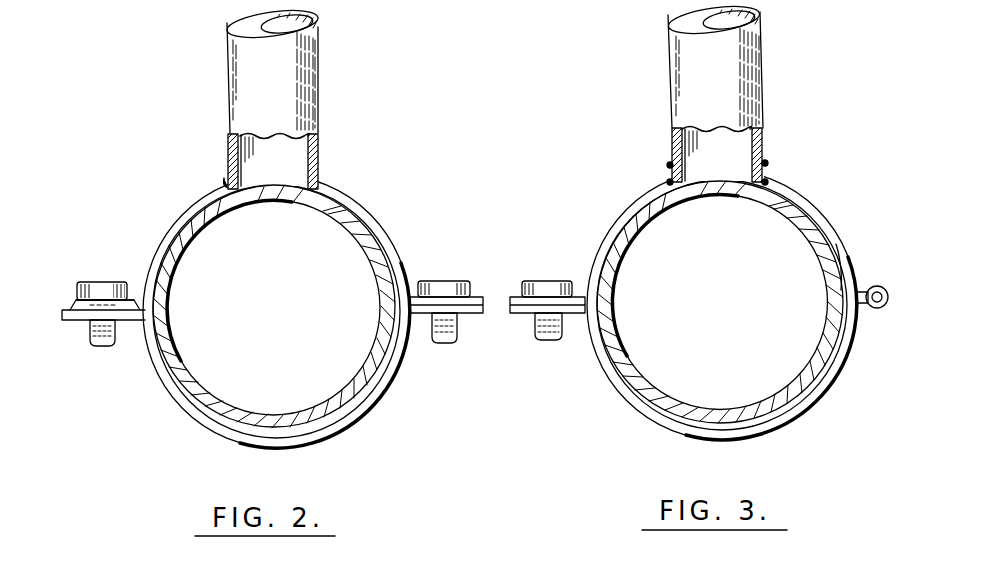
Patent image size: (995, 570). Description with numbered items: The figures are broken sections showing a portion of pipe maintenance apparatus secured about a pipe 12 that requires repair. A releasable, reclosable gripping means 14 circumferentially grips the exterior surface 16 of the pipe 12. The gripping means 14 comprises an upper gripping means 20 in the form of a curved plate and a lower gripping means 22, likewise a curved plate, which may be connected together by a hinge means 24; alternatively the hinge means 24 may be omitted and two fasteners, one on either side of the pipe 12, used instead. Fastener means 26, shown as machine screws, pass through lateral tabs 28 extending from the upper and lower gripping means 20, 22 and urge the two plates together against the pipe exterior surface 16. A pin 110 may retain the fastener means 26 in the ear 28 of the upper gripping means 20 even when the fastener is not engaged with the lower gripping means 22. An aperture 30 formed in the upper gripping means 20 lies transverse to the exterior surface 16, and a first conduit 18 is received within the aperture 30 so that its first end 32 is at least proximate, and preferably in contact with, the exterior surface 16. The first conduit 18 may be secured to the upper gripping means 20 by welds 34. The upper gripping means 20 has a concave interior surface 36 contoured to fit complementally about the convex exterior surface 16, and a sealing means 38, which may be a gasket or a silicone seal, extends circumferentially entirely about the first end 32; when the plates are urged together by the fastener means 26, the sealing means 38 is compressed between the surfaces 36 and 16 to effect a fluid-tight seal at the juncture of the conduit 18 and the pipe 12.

In FIG. 3, the pipe 12 is at (805, 241).
In FIG. 2, the gripping means 14 is at (422, 364).
In FIG. 3, the gripping means 14 is at (584, 364).
In FIG. 3, the exterior surface 16 is at (845, 270).
In FIG. 2, the first conduit 18 is at (320, 62).
In FIG. 3, the first conduit 18 is at (764, 56).
In FIG. 2, the upper gripping means 20 is at (351, 199).
In FIG. 3, the upper gripping means 20 is at (833, 225).
In FIG. 2, the lower gripping means 22 is at (369, 410).
In FIG. 3, the lower gripping means 22 is at (812, 403).
In FIG. 3, the hinge means 24 is at (887, 288).
In FIG. 2, the fastener means 26 is at (108, 283).
In FIG. 3, the fastener means 26 is at (547, 310).
In FIG. 2, the lateral tabs 28 is at (69, 307).
In FIG. 2, the aperture 30 is at (226, 183).
In FIG. 2, the first end 32 is at (252, 172).
In FIG. 3, the first end 32 is at (690, 170).
In FIG. 2, the welds 34 is at (322, 172).
In FIG. 3, the welds 34 is at (765, 162).
In FIG. 3, the concave interior surface 36 is at (791, 193).
In FIG. 3, the sealing means 38 is at (667, 175).
In FIG. 2, the pin 110 is at (91, 301).